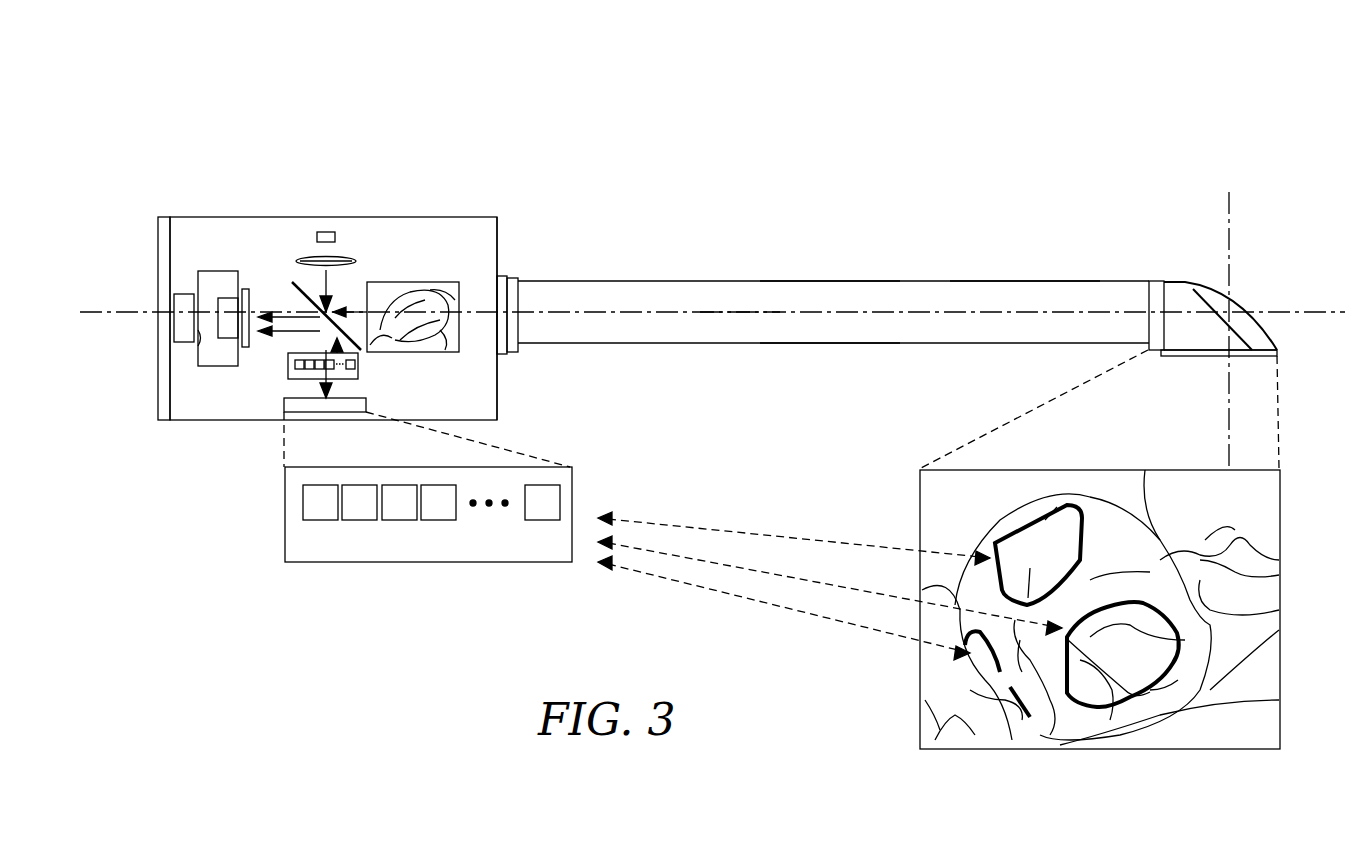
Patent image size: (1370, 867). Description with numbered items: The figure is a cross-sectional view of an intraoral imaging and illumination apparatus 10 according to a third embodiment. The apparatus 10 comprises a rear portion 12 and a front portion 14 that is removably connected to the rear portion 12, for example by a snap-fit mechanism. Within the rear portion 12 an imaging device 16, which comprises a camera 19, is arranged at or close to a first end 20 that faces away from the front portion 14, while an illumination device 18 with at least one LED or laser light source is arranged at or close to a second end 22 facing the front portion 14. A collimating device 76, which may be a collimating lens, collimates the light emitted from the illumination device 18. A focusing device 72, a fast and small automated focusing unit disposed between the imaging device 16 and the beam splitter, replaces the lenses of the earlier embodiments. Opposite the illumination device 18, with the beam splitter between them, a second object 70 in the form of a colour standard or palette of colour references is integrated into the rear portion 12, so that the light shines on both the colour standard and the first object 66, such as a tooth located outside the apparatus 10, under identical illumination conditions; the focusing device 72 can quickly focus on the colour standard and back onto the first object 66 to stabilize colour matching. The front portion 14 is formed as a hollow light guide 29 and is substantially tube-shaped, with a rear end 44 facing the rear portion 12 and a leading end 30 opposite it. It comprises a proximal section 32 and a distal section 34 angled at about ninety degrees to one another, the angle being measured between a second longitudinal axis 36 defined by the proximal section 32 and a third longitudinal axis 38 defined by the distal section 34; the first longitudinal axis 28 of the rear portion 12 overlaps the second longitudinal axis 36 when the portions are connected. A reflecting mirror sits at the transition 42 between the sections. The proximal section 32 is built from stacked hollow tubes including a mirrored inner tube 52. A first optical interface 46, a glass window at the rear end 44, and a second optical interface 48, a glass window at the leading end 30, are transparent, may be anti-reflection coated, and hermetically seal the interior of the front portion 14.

The intraoral imaging and illumination apparatus 10 is at (190, 107).
The rear portion 12 is at (436, 217).
The front portion 14 is at (903, 281).
The imaging device 16 is at (180, 303).
The illumination device 18 is at (326, 232).
The camera 19 is at (198, 338).
The first end 20 is at (158, 397).
The second end 22 is at (498, 222).
The first longitudinal axis 28 is at (260, 308).
The light guide 29 is at (863, 265).
The leading end 30 is at (1268, 357).
The proximal section 32 is at (825, 265).
The distal section 34 is at (1272, 338).
The second longitudinal axis 36 is at (733, 310).
The third longitudinal axis 38 is at (1232, 212).
The transition 42 is at (1212, 290).
The rear end 44 is at (498, 234).
The first optical interface 46 is at (515, 286).
The second optical interface 48 is at (1282, 353).
The inner tube 52 is at (995, 281).
The first object 66 is at (1282, 532).
The second object 70 is at (308, 413).
The focusing device 72 is at (218, 271).
The collimating device 76 is at (340, 262).